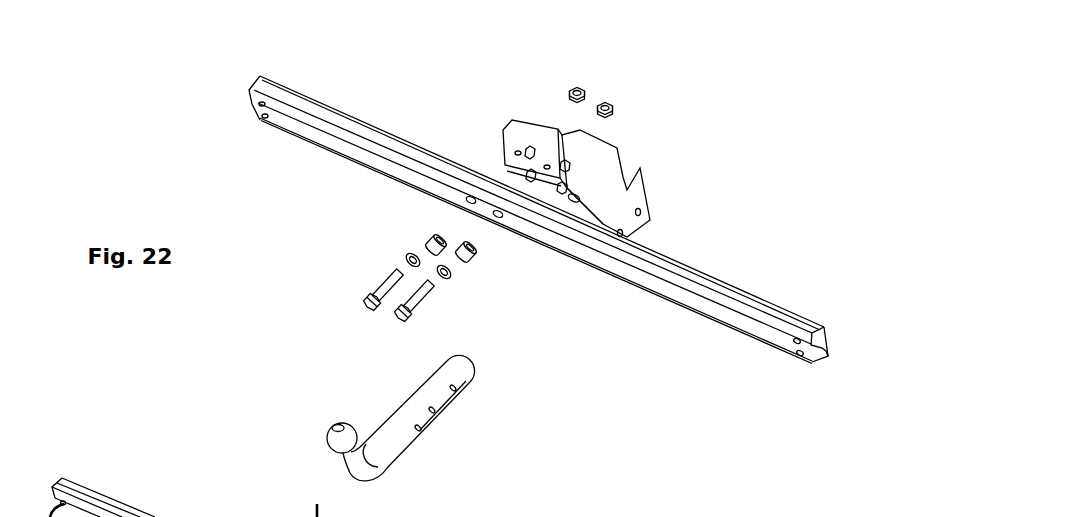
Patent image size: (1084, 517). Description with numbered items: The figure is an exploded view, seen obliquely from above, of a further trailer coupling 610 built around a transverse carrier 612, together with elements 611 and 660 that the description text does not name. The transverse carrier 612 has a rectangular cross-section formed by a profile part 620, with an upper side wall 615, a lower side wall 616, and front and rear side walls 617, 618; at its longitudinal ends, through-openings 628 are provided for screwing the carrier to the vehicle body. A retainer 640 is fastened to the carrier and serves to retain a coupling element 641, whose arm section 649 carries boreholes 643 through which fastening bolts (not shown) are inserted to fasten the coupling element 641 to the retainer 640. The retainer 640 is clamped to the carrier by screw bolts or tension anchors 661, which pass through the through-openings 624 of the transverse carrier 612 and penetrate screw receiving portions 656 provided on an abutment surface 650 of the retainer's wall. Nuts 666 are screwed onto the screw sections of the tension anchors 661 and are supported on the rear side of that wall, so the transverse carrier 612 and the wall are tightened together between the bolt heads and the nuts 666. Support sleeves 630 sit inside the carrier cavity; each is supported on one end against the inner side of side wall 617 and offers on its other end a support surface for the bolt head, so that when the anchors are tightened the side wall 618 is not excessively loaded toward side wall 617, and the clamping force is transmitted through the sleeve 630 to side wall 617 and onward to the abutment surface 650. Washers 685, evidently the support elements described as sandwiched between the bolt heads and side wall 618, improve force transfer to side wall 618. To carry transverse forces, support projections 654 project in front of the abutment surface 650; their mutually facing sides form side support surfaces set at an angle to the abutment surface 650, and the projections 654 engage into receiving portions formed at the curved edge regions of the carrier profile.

The hitch assembly 610 is at (473, 263).
The cross beam 611 is at (737, 283).
The transverse carrier 612 is at (712, 327).
The upper side wall 615 is at (812, 328).
The lower side wall 616 is at (826, 360).
The front side wall 617 is at (828, 342).
The rear side wall 618 is at (810, 363).
The profile part 620 is at (668, 300).
The through-openings 624 is at (473, 204).
The screw openings or through-openings 628 is at (262, 106).
The support sleeves 630 is at (444, 248).
The retainer 640 is at (490, 288).
The coupling element 641 is at (405, 418).
The boreholes 643 is at (454, 392).
The arm section 649 is at (417, 400).
The abutment surface 650 is at (563, 170).
The support projections 654 is at (562, 166).
The screw receiving portions 656 is at (547, 168).
The fastener set 660 is at (404, 290).
The screw bolts or tension anchors 661 is at (372, 309).
The nuts 666 is at (586, 86).
The washers 685 is at (420, 268).